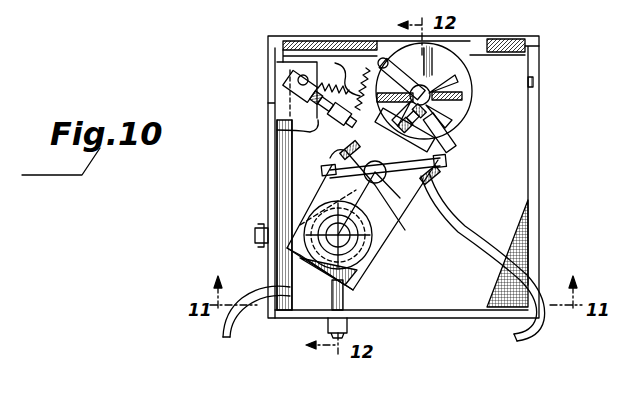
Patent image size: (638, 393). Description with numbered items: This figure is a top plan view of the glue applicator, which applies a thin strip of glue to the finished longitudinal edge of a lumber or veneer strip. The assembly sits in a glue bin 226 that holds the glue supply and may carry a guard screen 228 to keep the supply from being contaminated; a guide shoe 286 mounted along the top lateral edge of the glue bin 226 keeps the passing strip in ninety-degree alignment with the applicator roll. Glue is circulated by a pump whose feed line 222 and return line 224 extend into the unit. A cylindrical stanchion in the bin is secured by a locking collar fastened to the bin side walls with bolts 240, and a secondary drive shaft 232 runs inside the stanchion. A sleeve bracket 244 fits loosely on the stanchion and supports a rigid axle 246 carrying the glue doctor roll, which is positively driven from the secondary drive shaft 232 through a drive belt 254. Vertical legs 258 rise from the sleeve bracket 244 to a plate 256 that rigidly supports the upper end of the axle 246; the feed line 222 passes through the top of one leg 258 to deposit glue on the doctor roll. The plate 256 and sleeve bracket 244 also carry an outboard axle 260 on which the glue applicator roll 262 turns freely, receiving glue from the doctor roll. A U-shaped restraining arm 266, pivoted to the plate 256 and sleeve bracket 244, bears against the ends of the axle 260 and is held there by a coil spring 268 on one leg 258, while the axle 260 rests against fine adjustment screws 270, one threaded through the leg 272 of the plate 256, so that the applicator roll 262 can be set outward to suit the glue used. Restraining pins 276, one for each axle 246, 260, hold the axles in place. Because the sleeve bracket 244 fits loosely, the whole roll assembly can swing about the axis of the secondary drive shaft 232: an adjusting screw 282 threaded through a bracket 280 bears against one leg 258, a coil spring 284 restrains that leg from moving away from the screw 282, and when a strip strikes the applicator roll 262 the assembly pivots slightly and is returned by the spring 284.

The feed line 222 is at (522, 336).
The return line 224 is at (236, 325).
The glue bin 226 is at (413, 318).
The guard screen 228 is at (524, 250).
The secondary drive shaft 232 is at (361, 237).
The bolts 240 is at (266, 216).
The sleeve bracket 244 is at (382, 260).
The rigid axle 246 is at (396, 204).
The drive belt 254 is at (372, 232).
The plate 256 is at (338, 168).
The legs 258 is at (340, 150).
The outboard axle 260 is at (448, 96).
The glue applicator roll 262 is at (485, 50).
The U-shaped restraining arm 266 is at (393, 48).
The coil spring 268 is at (326, 95).
The fine adjustment screws 270 is at (458, 103).
The leg of plate 272 is at (442, 130).
The restraining pins 276 is at (458, 88).
The bracket 280 is at (285, 74).
The adjusting screw 282 is at (277, 136).
The coil spring 284 is at (322, 65).
The guide shoe 286 is at (539, 46).